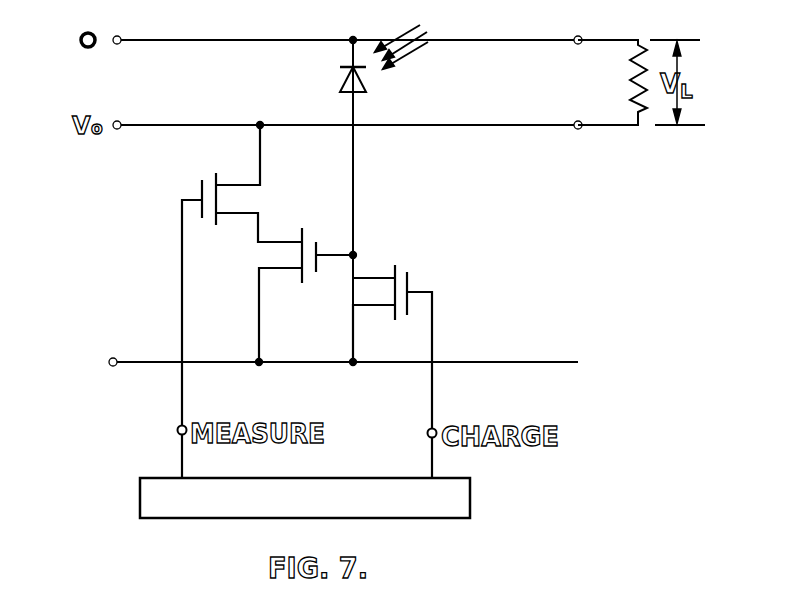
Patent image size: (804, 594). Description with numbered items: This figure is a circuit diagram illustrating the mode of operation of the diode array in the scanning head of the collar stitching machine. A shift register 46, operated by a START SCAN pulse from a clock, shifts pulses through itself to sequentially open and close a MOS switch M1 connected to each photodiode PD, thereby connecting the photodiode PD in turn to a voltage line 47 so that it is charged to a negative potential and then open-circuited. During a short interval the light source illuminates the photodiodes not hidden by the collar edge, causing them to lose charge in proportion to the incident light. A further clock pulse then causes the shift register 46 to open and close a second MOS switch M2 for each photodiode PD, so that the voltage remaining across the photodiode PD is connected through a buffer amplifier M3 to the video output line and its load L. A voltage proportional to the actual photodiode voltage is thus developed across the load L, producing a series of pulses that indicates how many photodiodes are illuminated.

The shift register 46 is at (470, 500).
The voltage line 47 is at (533, 363).
The MOS switch M1 is at (401, 367).
The MOS switch M2 is at (229, 301).
The buffer amplifier M3 is at (308, 295).
The photodiode PD is at (384, 194).
The load L is at (612, 82).